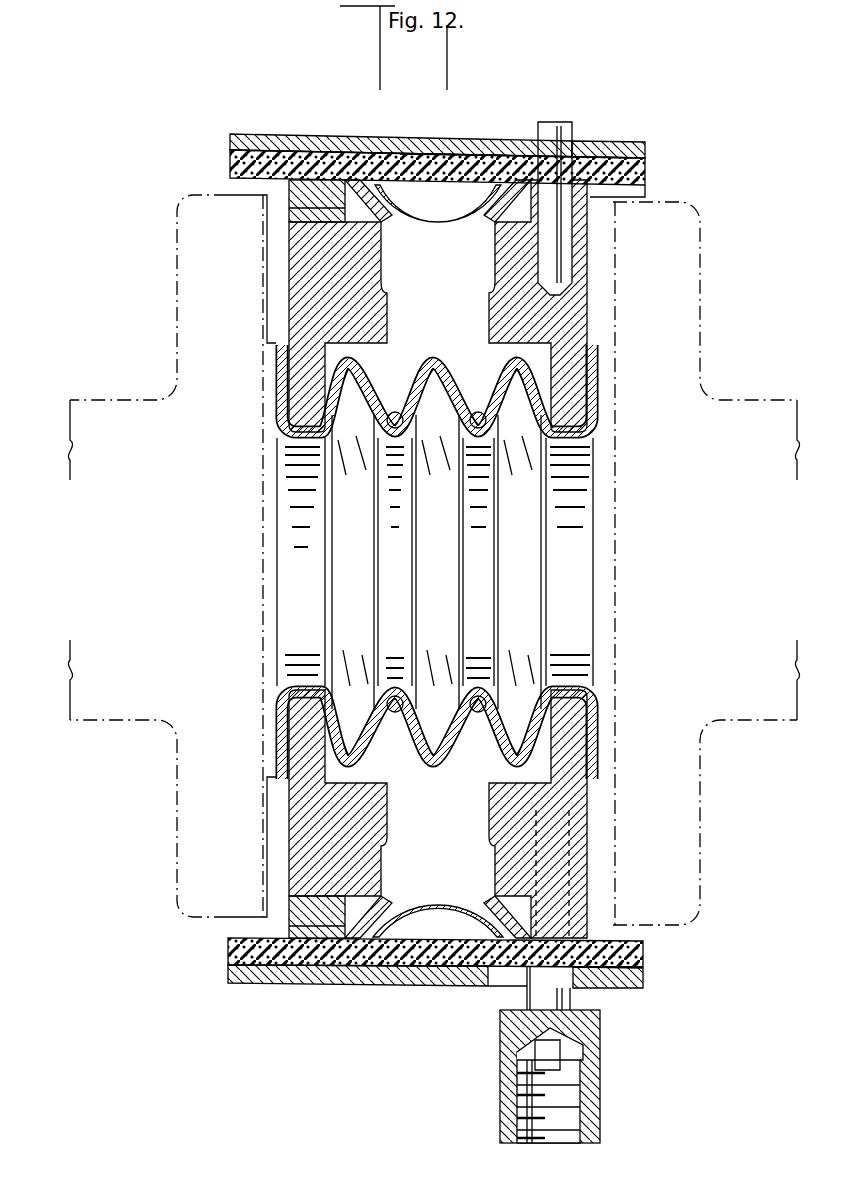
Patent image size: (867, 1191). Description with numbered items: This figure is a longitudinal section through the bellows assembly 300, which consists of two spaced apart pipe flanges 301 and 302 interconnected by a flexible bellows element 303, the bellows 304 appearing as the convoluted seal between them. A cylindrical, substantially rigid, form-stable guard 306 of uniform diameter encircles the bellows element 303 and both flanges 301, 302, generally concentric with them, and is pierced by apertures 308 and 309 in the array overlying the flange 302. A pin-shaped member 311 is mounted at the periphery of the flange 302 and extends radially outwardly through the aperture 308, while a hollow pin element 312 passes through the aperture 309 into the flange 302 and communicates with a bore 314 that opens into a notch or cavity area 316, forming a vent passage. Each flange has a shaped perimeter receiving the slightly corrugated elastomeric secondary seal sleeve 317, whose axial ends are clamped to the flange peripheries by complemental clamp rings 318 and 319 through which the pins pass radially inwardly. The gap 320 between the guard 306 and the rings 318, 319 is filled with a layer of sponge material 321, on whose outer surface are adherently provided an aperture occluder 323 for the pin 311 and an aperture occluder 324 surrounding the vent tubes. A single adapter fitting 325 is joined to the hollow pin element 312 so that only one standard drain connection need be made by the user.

The bellows assembly 300 is at (492, 118).
The pipe flange 301 is at (310, 278).
The pipe flange 302 is at (566, 325).
The bellows element 303 is at (578, 441).
The bellows seal 304 is at (472, 408).
The guard 306 is at (405, 137).
The aperture 308 is at (598, 141).
The aperture 309 is at (603, 988).
The pin-shaped member 311 is at (566, 124).
The hollow pin element 312 is at (562, 1000).
The bore 314 is at (553, 828).
The notch or cavity area 316 is at (500, 797).
The secondary seal sleeve 317 is at (433, 222).
The clamp ring 318 is at (338, 193).
The clamp ring 319 is at (590, 198).
The gap 320 is at (232, 163).
The layer of sponge material 321 is at (447, 149).
The aperture occluder 323 is at (511, 152).
The aperture occluder 324 is at (495, 986).
The adapter fitting 325 is at (600, 1100).